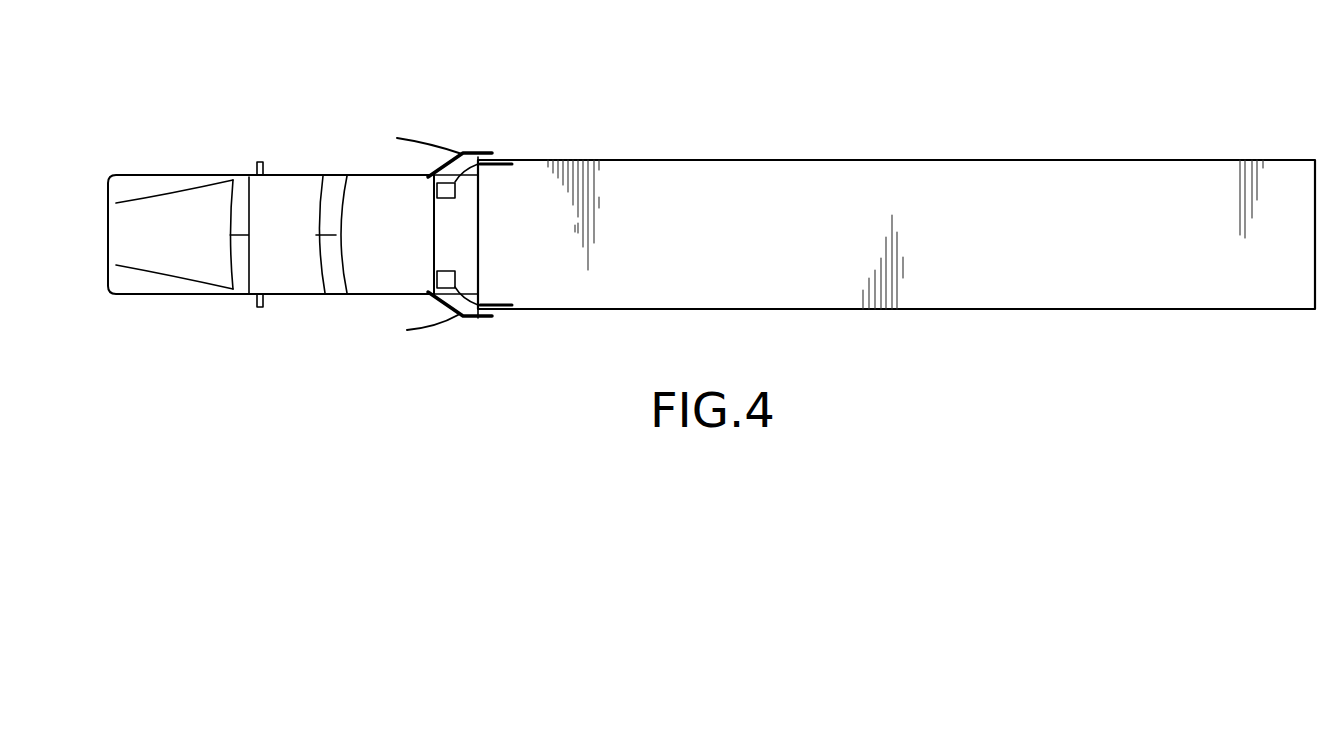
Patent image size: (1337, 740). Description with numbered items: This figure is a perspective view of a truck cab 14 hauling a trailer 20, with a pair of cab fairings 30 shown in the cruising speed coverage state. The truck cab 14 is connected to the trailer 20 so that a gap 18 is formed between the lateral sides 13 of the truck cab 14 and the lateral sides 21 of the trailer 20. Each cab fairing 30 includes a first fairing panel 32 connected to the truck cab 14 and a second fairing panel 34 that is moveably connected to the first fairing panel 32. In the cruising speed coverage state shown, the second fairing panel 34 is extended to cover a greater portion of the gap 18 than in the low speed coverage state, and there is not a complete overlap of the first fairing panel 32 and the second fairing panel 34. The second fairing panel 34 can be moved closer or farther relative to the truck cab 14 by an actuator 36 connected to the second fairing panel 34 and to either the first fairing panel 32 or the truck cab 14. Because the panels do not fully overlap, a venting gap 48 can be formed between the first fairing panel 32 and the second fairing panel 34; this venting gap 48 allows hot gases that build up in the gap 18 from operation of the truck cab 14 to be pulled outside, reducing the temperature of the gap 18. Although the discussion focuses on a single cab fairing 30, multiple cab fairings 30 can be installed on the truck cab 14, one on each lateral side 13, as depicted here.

The lateral side 13 is at (320, 175).
The truck cab 14 is at (283, 300).
The gap 18 is at (487, 165).
The trailer 20 is at (624, 310).
The lateral side 21 is at (940, 159).
The cab fairing 30 is at (422, 97).
The first fairing panel 32 is at (441, 170).
The second fairing panel 34 is at (480, 163).
The actuator 36 is at (455, 188).
The venting gap 48 is at (397, 138).